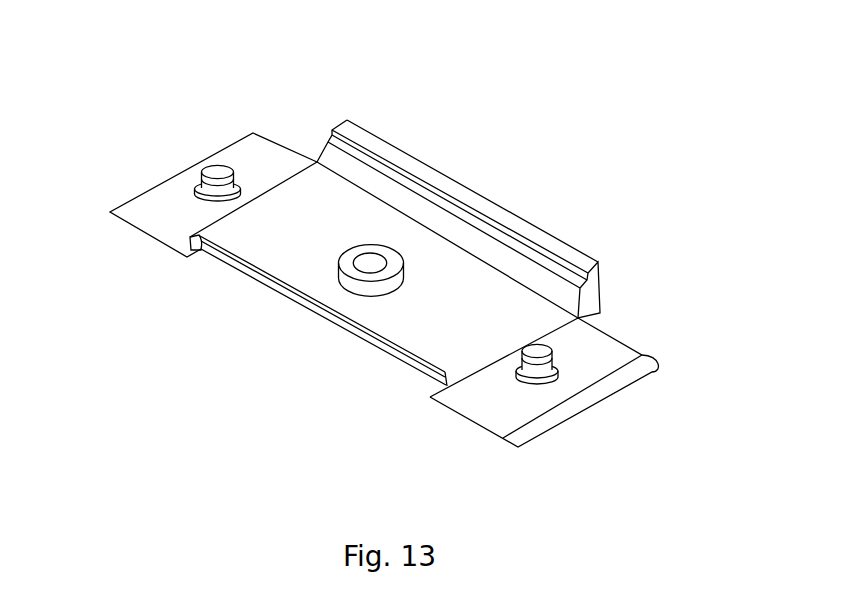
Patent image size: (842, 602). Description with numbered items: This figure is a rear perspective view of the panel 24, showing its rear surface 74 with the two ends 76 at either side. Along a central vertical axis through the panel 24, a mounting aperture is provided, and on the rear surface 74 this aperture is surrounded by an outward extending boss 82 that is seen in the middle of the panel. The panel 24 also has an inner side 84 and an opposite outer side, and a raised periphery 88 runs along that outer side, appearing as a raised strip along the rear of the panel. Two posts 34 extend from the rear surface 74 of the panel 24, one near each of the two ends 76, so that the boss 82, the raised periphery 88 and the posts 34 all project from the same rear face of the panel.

The panel 24 is at (132, 113).
The posts 34 is at (218, 168).
The rear surface 74 is at (321, 229).
The ends 76 is at (182, 173).
The outward extending boss 82 is at (343, 262).
The inner side 84 is at (323, 310).
The raised periphery 88 is at (478, 188).